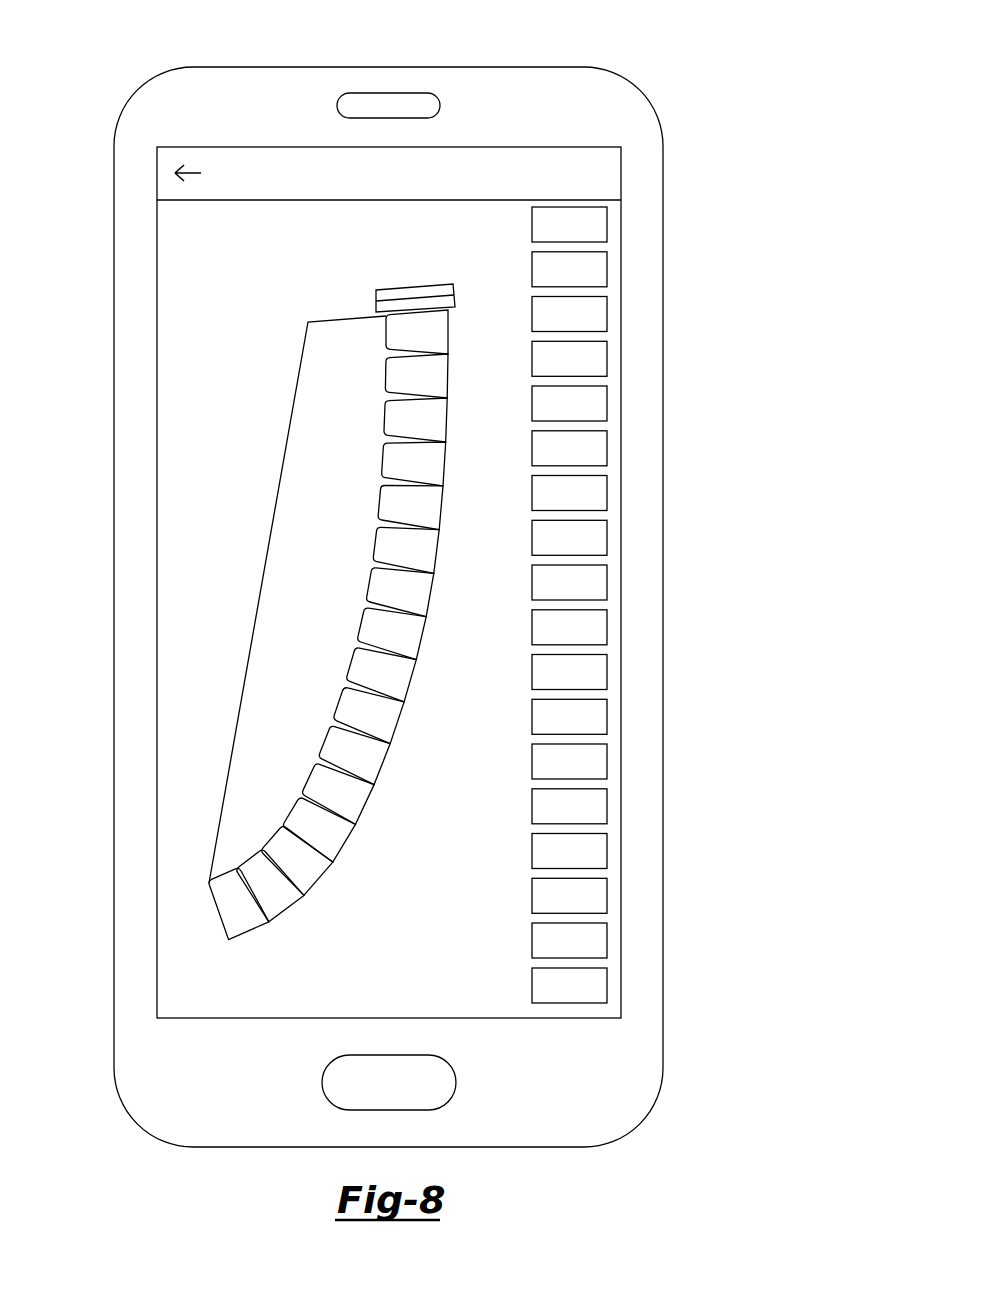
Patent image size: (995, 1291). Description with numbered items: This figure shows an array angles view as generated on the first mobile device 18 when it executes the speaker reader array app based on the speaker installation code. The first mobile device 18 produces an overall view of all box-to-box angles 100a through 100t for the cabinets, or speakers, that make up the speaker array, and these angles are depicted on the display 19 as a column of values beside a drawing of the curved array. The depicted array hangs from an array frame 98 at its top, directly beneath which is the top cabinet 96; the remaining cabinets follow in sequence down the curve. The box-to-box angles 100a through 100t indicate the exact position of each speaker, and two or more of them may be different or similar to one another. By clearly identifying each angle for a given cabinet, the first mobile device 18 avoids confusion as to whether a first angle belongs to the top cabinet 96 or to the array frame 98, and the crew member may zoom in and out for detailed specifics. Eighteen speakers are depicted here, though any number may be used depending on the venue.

The first mobile device 18 is at (290, 67).
The top cabinet 96 is at (630, 80).
The display 19 is at (156, 328).
The array frame 98 is at (415, 287).
The box-to-box angle 100a is at (607, 223).
The box-to-box angle 100t is at (607, 984).